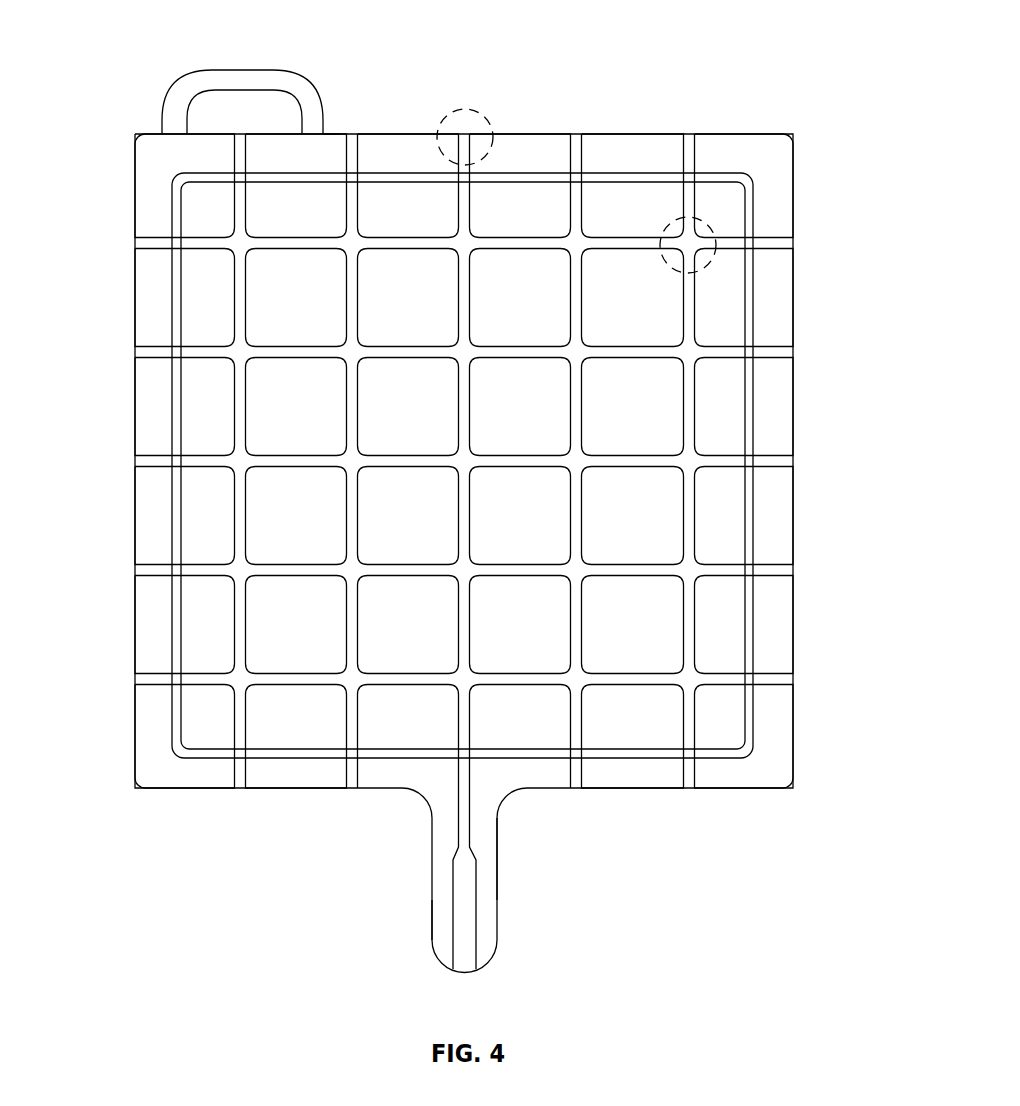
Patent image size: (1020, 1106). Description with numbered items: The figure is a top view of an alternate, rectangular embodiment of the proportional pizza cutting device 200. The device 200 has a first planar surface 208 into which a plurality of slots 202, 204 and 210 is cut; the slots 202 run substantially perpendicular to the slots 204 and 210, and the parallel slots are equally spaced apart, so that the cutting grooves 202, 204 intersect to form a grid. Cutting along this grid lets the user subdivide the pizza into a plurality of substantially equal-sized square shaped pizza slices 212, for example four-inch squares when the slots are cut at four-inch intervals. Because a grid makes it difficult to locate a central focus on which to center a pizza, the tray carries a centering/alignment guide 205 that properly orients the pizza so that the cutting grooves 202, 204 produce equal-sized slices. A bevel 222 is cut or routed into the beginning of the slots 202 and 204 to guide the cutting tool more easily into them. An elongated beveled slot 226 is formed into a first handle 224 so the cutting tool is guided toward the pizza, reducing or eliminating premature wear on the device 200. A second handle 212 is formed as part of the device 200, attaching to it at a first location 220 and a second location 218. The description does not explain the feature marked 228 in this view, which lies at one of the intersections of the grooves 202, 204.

The device 200 is at (763, 42).
The slots 202 is at (217, 237).
The slots 204 is at (231, 722).
The centering guide 205 is at (170, 178).
The first planar surface 208 is at (314, 312).
The slot 210 is at (458, 792).
The square shaped pizza slices 212 is at (217, 67).
The second location 218 is at (307, 134).
The first location 220 is at (180, 128).
The bevel 222 is at (487, 121).
The first handle 224 is at (502, 829).
The elongated beveled slot 226 is at (478, 917).
The seal intersection 228 is at (702, 225).